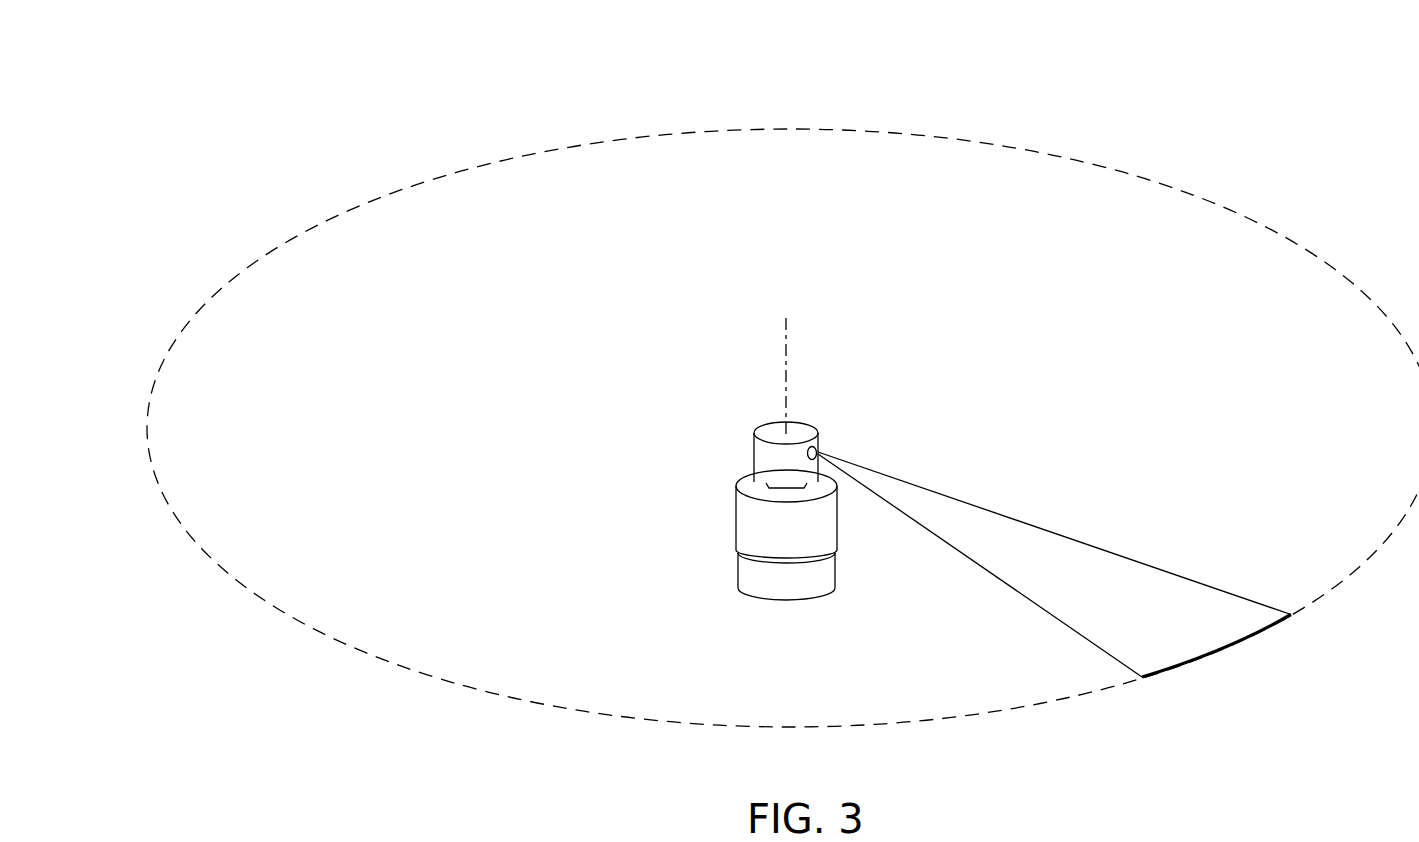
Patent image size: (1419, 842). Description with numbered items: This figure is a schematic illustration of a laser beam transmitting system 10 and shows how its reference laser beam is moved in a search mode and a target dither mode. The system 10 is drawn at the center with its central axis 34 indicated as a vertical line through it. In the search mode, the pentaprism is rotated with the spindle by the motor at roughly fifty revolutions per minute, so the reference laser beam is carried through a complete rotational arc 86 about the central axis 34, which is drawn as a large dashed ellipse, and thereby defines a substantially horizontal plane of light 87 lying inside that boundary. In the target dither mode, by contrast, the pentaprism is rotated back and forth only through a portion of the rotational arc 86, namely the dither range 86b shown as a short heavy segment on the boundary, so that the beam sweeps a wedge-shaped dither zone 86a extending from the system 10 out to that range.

The detector device 10 is at (692, 562).
The central axis 34 is at (786, 332).
The rotational arc 86 is at (912, 136).
The dither zone 86a is at (1110, 568).
The dither range 86b is at (1232, 645).
The substantially horizontal plane of light 87 is at (433, 477).